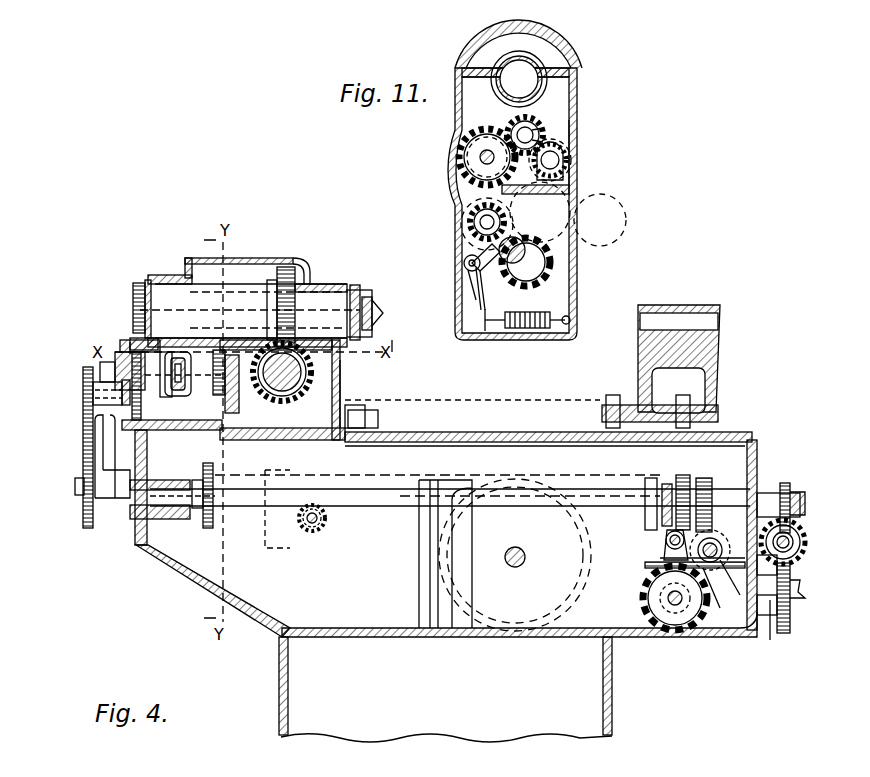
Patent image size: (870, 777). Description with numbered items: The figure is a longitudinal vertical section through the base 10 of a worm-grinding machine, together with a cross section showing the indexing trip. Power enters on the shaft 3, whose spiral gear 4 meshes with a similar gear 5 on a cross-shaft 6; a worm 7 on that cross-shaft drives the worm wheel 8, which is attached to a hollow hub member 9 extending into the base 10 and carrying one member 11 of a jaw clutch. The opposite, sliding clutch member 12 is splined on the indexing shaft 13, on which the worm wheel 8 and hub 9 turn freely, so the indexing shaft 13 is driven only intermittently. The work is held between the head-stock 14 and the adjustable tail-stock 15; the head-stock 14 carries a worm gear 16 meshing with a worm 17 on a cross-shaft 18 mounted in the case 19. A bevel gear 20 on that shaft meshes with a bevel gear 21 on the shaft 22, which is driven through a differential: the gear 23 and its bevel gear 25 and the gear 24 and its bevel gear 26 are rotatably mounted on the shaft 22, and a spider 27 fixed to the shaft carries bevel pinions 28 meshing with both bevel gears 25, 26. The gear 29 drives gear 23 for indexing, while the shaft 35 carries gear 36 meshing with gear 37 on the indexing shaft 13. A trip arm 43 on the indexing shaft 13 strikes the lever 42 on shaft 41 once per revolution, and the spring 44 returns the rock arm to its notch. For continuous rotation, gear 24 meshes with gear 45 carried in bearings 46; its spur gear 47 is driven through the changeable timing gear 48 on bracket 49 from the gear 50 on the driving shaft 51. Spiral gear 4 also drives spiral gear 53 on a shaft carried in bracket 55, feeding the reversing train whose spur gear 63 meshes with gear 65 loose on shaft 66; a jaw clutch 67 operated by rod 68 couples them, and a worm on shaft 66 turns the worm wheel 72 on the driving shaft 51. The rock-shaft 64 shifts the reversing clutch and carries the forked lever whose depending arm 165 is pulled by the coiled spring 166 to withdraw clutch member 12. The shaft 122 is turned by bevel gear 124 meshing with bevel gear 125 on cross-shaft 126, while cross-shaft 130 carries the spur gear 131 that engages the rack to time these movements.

In FIG. 4, the shaft 3 is at (800, 585).
In FIG. 4, the spiral gear 4 is at (795, 605).
In FIG. 4, the spiral gear 5 is at (808, 552).
In FIG. 4, the cross-shaft 6 is at (800, 542).
In FIG. 4, the worm 7 is at (792, 536).
In FIG. 4, the worm wheel 8 is at (800, 500).
In FIG. 4, the hollow hub member 9 is at (770, 491).
In FIG. 11, the base 10 is at (577, 270).
In FIG. 4, the base 10 is at (760, 470).
In FIG. 4, the jaw clutch member 11 is at (718, 482).
In FIG. 4, the sliding clutch member 12 is at (690, 490).
In FIG. 11, the indexing shaft 13 is at (527, 255).
In FIG. 4, the indexing shaft 13 is at (697, 490).
In FIG. 11, the head-stock 14 is at (543, 66).
In FIG. 4, the head-stock 14 is at (355, 288).
In FIG. 4, the tail-stock 15 is at (700, 350).
In FIG. 4, the worm gear 16 is at (293, 264).
In FIG. 4, the worm 17 is at (341, 386).
In FIG. 4, the cross-shaft 18 is at (300, 375).
In FIG. 11, the frame or case 19 is at (574, 127).
In FIG. 4, the frame or case 19 is at (350, 396).
In FIG. 4, the bevel gear 20 is at (340, 407).
In FIG. 4, the bevel gear 21 is at (270, 392).
In FIG. 11, the shaft 22 is at (532, 134).
In FIG. 4, the shaft 22 is at (235, 395).
In FIG. 11, the gear 23 is at (530, 118).
In FIG. 4, the gear 23 is at (224, 362).
In FIG. 4, the gear 24 is at (132, 342).
In FIG. 4, the bevel gear 25 is at (193, 362).
In FIG. 4, the bevel gear 26 is at (135, 292).
In FIG. 4, the spider 27 is at (112, 356).
In FIG. 4, the bevel pinions 28 is at (186, 384).
In FIG. 11, the gear 29 is at (458, 168).
In FIG. 11, the shaft 35 is at (466, 214).
In FIG. 11, the gear 36 is at (480, 223).
In FIG. 11, the gear 37 is at (550, 280).
In FIG. 4, the gear 37 is at (214, 511).
In FIG. 11, the shaft 41 is at (464, 264).
In FIG. 11, the lever 42 is at (476, 268).
In FIG. 11, the trip arm 43 is at (490, 256).
In FIG. 4, the trip arm 43 is at (204, 476).
In FIG. 11, the spring 44 is at (540, 321).
In FIG. 11, the gear 45 is at (570, 151).
In FIG. 4, the gear 45 is at (84, 372).
In FIG. 11, the bearings 46 is at (557, 162).
In FIG. 4, the bearings 46 is at (147, 409).
In FIG. 11, the spur gear 47 is at (576, 138).
In FIG. 4, the spur gear 47 is at (93, 396).
In FIG. 11, the timing gear 48 is at (614, 200).
In FIG. 4, the timing gear 48 is at (82, 440).
In FIG. 4, the bracket 49 is at (95, 418).
In FIG. 4, the gear 50 is at (103, 465).
In FIG. 4, the driving shaft 51 is at (76, 486).
In FIG. 4, the spiral gear 53 is at (790, 625).
In FIG. 4, the bracket 55 is at (770, 620).
In FIG. 4, the spur gear 63 is at (648, 600).
In FIG. 4, the rock-shaft 64 is at (668, 543).
In FIG. 4, the gear 65 is at (714, 572).
In FIG. 4, the shaft 66 is at (712, 572).
In FIG. 4, the jaw clutch 67 is at (720, 566).
In FIG. 4, the rod 68 is at (767, 565).
In FIG. 4, the worm wheel 72 is at (727, 446).
In FIG. 4, the shaft 122 is at (292, 540).
In FIG. 4, the bevel gear 124 is at (322, 545).
In FIG. 4, the bevel gear 125 is at (326, 517).
In FIG. 4, the cross-shaft 126 is at (318, 522).
In FIG. 4, the cross-shaft 130 is at (524, 551).
In FIG. 4, the spur gear 131 is at (593, 538).
In FIG. 4, the depending arm 165 is at (660, 558).
In FIG. 4, the coiled spring 166 is at (666, 565).